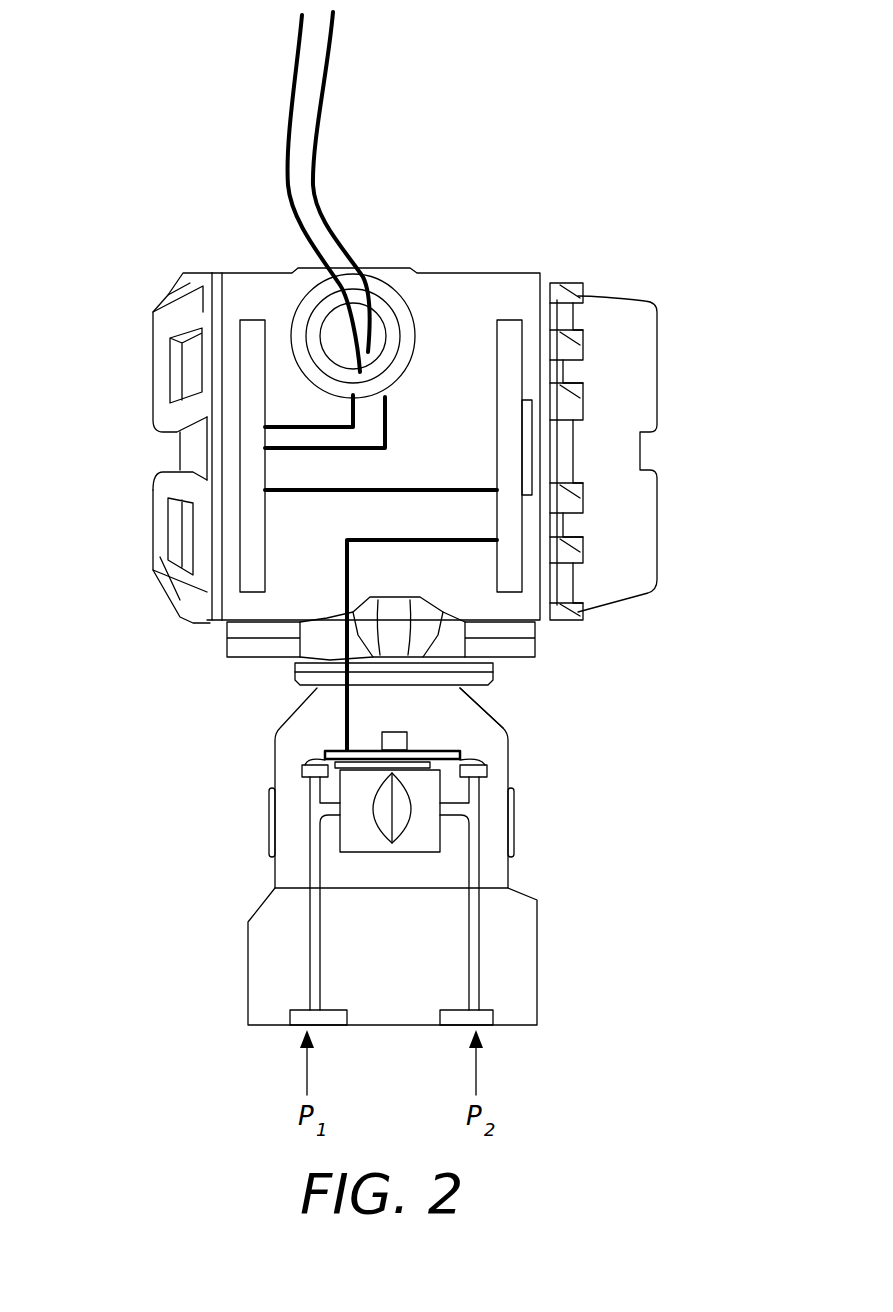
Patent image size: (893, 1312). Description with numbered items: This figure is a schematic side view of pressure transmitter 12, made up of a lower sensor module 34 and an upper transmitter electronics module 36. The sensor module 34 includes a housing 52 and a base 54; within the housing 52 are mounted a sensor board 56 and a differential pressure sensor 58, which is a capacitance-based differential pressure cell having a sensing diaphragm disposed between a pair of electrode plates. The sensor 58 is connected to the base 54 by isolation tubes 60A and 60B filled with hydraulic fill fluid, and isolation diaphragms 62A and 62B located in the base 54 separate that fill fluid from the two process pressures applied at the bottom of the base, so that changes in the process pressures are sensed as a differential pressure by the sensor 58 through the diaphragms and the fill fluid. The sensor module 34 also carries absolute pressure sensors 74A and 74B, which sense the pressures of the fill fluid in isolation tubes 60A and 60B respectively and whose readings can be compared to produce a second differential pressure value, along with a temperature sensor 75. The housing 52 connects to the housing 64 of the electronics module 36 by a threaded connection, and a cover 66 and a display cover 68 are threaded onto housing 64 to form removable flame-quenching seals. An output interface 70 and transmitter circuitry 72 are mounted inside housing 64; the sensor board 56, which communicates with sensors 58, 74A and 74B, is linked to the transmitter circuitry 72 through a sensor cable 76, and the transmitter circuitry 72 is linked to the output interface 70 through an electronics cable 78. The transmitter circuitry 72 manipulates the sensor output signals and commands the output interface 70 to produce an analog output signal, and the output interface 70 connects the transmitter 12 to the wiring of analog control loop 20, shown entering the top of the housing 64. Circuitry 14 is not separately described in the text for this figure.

The pressure transmitter 12 is at (180, 230).
The transmitter circuitry 14 is at (527, 441).
The control loop 20 is at (334, 108).
The sensor module 34 is at (527, 813).
The transmitter electronics module 36 is at (505, 278).
The housing 52 is at (407, 731).
The base 54 is at (522, 980).
The sensor board 56 is at (325, 752).
The differential pressure sensor 58 is at (423, 788).
The isolation tube 60A is at (483, 1010).
The isolation tube 60B is at (314, 917).
The isolation diaphragm 62A is at (478, 920).
The isolation diaphragm 62B is at (293, 1008).
The housing 64 is at (440, 277).
The cover 66 is at (165, 481).
The display cover 68 is at (648, 584).
The output interface 70 is at (253, 320).
The transmitter circuitry 72 is at (578, 296).
The absolute pressure sensor 74A is at (487, 766).
The absolute pressure sensor 74B is at (301, 770).
The temperature sensor 75 is at (463, 738).
The sensor cable 76 is at (343, 722).
The electronics cable 78 is at (403, 492).